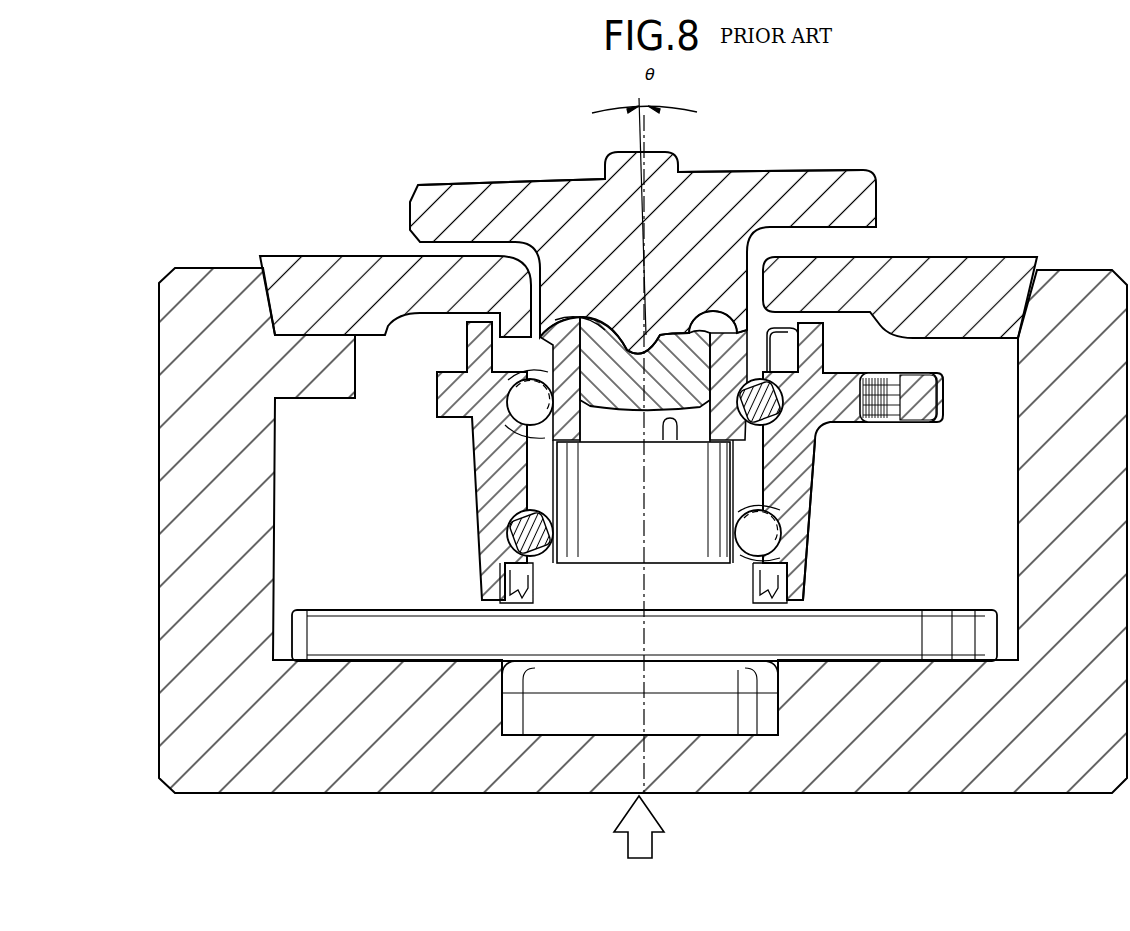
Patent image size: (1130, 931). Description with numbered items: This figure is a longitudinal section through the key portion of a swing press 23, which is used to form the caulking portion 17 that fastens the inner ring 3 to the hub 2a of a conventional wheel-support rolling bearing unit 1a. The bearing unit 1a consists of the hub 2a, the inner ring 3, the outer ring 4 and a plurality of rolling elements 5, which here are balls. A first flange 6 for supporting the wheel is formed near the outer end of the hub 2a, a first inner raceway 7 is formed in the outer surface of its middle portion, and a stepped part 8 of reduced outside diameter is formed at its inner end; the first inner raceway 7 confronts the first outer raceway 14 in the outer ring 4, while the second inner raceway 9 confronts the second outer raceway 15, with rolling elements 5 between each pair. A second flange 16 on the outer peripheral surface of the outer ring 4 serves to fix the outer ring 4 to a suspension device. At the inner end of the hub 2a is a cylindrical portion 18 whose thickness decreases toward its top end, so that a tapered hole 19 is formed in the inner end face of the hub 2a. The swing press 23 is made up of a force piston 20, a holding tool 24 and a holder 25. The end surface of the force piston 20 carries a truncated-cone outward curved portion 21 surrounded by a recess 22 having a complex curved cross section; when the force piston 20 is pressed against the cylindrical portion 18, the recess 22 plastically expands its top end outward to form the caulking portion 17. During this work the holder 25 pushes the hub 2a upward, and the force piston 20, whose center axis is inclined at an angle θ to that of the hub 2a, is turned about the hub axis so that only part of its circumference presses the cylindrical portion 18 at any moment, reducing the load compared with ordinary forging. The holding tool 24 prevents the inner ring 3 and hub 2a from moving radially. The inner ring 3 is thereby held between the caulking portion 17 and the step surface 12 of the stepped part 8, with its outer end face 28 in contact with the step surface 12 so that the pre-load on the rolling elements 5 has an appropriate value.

The wheel-support rolling bearing unit 1a is at (812, 580).
The hub 2a is at (563, 690).
The inner ring 3 is at (592, 432).
The outer ring 4 is at (795, 490).
The rolling elements 5 is at (812, 430).
The first flange 6 is at (387, 645).
The first inner raceway 7 is at (545, 556).
The stepped part 8 is at (767, 350).
The second inner raceway 9 is at (705, 418).
The step surface 12 is at (670, 447).
The first outer raceway 14 is at (805, 530).
The second outer raceway 15 is at (490, 418).
The second flange 16 is at (925, 397).
The caulking portion 17 is at (576, 305).
The cylindrical portion 18 is at (713, 315).
The tapered hole 19 is at (705, 303).
The force piston 20 is at (848, 182).
The outward curved portion 21 is at (622, 333).
The recess 22 is at (720, 325).
The swing press 23 is at (962, 797).
The holding tool 24 is at (363, 262).
The holder 25 is at (283, 774).
The outer end face 28 is at (520, 468).